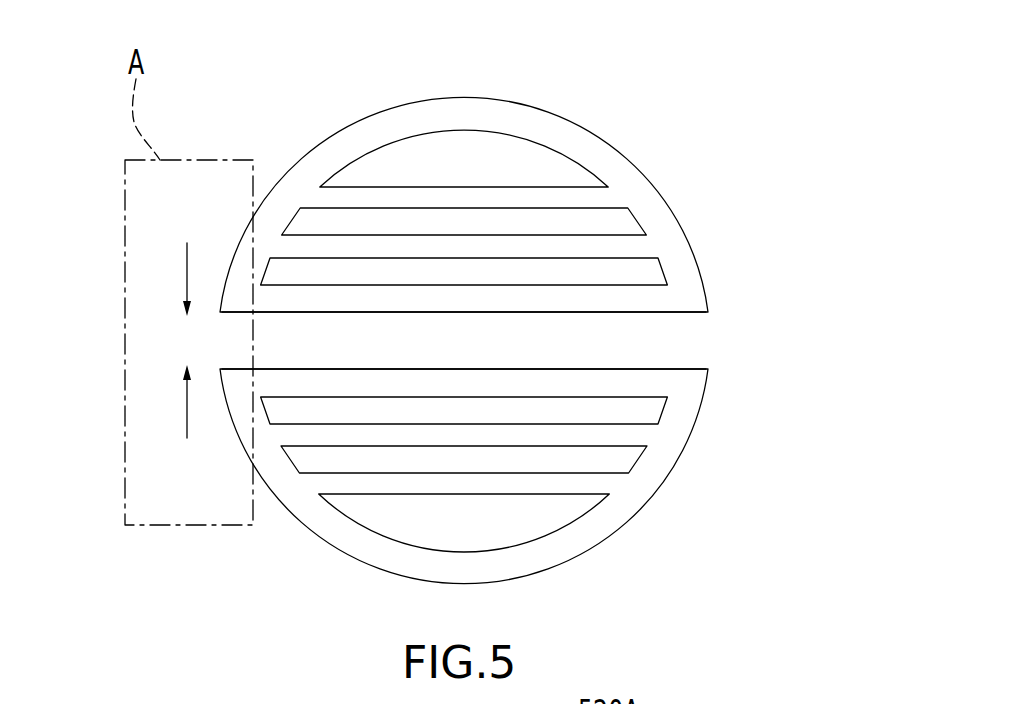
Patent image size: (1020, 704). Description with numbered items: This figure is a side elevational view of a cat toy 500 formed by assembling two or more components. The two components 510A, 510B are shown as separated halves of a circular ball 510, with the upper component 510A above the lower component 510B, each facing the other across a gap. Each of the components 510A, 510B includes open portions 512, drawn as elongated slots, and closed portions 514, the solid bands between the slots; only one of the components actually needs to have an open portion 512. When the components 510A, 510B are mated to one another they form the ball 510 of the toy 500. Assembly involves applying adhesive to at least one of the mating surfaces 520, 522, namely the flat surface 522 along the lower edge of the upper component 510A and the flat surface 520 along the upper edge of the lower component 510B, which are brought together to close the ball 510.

The cat toy 500 is at (95, 188).
The ball 510 is at (535, 292).
The component 510A is at (517, 201).
The component 510B is at (535, 469).
The open portion 512 is at (585, 273).
The closed portion 514 is at (540, 247).
The mating surface 520 is at (655, 368).
The mating surface 522 is at (667, 314).